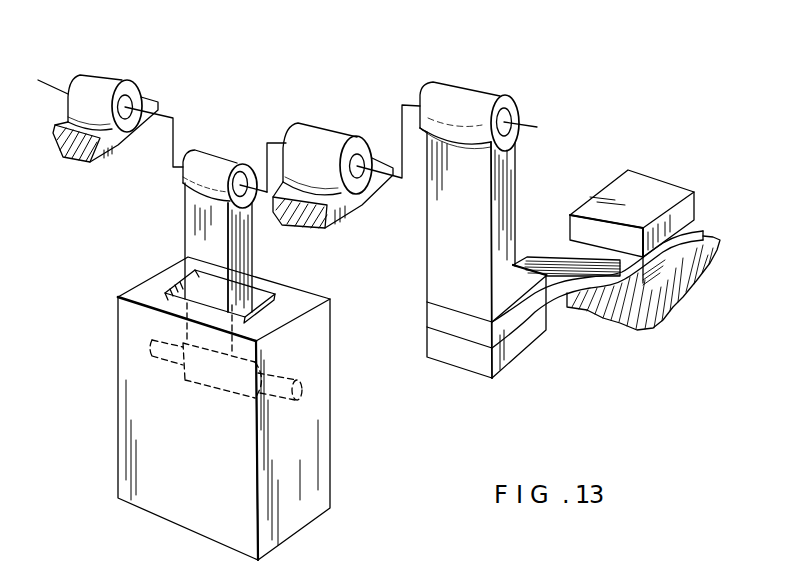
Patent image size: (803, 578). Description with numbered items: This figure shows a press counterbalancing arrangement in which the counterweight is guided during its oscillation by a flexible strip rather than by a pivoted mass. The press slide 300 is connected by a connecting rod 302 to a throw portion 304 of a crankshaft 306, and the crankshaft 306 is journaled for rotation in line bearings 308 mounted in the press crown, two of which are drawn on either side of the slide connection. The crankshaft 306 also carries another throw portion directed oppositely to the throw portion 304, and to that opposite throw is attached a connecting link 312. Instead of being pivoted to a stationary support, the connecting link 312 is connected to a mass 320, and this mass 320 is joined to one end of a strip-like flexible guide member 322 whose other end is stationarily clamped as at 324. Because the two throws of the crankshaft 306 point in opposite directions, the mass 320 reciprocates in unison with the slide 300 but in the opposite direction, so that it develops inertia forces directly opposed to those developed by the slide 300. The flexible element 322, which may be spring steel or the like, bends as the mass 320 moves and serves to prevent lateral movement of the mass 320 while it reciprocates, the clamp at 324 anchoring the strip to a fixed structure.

The press slide 300 is at (127, 412).
The connecting rod 302 is at (190, 240).
The throw portion 304 is at (249, 192).
The crankshaft 306 is at (173, 127).
The line bearings 308 is at (113, 77).
The connecting link 312 is at (511, 173).
The mass 320 is at (522, 274).
The strip-like flexible guide member 322 is at (588, 273).
The stationary clamp 324 is at (653, 187).